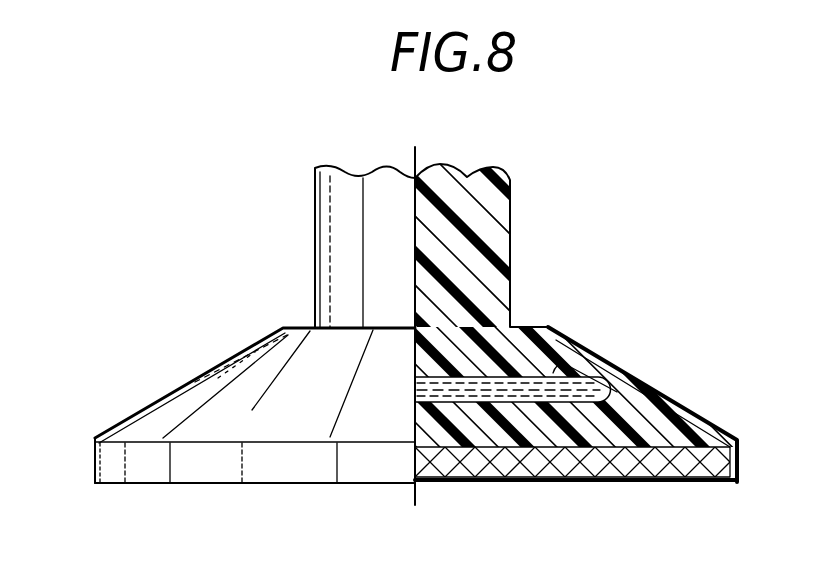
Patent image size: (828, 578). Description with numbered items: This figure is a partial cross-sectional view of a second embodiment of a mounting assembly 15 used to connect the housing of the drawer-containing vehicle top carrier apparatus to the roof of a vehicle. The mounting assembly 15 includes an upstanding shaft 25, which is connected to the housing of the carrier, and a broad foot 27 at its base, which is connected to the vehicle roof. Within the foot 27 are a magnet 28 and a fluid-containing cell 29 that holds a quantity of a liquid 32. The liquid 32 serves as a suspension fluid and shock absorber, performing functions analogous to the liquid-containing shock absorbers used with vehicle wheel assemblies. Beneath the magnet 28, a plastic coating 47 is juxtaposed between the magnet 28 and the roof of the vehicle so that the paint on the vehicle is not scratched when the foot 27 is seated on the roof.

The mounting assembly 15 is at (274, 243).
The shaft 25 is at (346, 195).
The foot 27 is at (217, 413).
The magnet 28 is at (480, 478).
The fluid-containing cell 29 is at (613, 385).
The liquid 32 is at (547, 385).
The plastic coating 47 is at (540, 478).